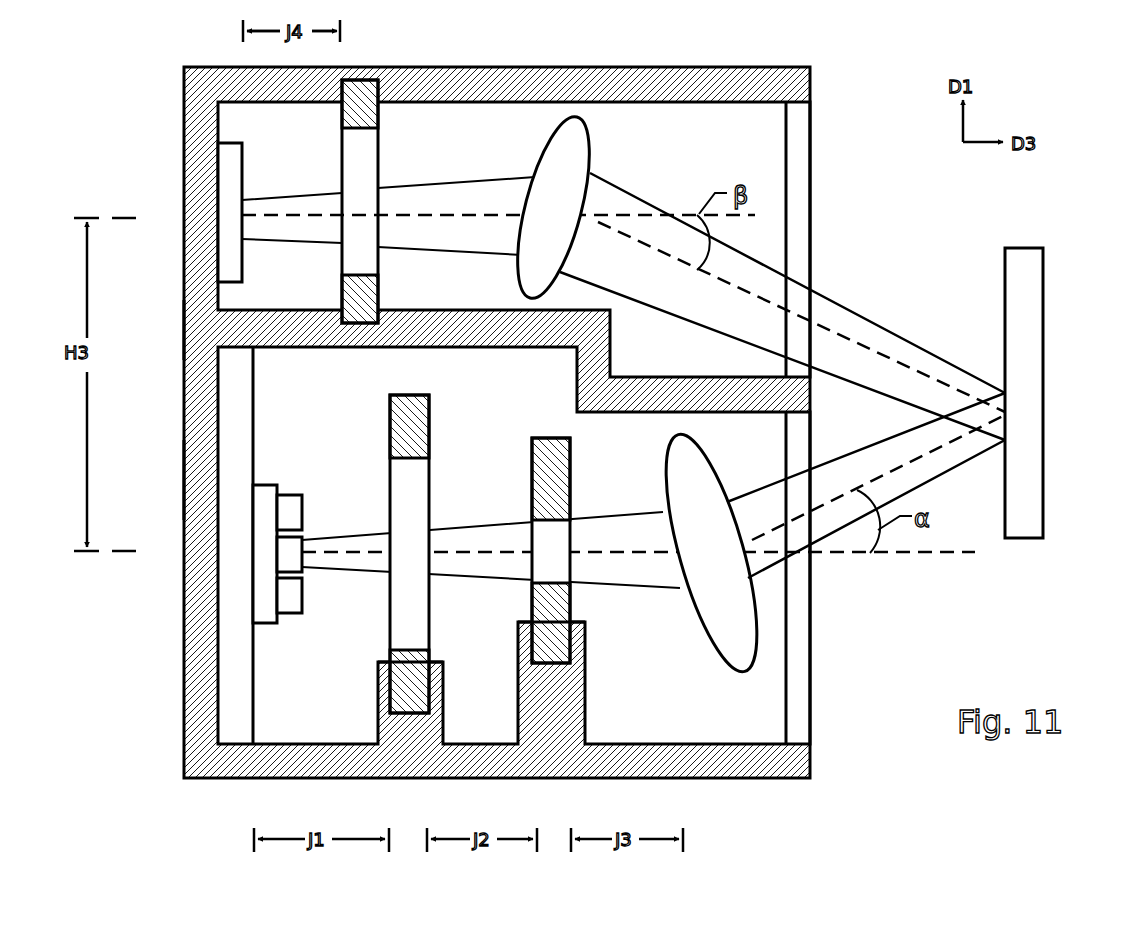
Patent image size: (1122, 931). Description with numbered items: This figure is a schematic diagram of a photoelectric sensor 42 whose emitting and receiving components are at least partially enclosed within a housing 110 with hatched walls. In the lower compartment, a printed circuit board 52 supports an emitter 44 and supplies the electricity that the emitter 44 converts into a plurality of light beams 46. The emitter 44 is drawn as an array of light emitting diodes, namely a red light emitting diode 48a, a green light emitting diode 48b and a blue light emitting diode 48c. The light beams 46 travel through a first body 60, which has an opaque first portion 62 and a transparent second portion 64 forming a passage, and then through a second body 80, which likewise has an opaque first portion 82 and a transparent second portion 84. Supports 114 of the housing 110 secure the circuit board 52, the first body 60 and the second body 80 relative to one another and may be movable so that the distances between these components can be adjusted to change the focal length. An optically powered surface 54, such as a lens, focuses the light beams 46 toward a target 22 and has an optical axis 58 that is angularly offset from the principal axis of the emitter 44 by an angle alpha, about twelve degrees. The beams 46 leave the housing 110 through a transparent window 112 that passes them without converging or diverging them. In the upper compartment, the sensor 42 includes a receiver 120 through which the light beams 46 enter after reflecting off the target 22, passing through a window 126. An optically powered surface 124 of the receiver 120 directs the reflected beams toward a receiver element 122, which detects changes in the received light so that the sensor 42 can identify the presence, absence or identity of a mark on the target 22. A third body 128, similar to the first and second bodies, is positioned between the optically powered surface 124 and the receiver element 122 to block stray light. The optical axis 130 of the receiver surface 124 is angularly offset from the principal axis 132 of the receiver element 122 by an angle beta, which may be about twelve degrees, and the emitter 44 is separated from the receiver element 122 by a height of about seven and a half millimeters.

The receiver 120 is at (814, 76).
The photoelectric sensor 42 is at (183, 331).
The housing 110 is at (183, 478).
The window 126 is at (811, 173).
The window 112 is at (811, 707).
The receiver element 122 is at (244, 155).
The third body 128 is at (380, 148).
The principal axis 132 is at (420, 216).
The optically powered surface 124 is at (590, 152).
The light beams 46 is at (840, 305).
The optical axis 130 is at (880, 353).
The target 22 is at (1044, 342).
The printed circuit board 52 is at (248, 393).
The emitter 44 is at (268, 482).
The blue light emitting diode 48c is at (290, 494).
The green light emitting diode 48b is at (301, 536).
The red light emitting diode 48a is at (291, 614).
The first body 60 is at (416, 552).
The first portion 62 is at (390, 420).
The second portion 64 is at (389, 630).
The second body 80 is at (552, 543).
The first portion 82 is at (532, 471).
The second portion 84 is at (532, 520).
The supports 114 is at (382, 715).
The optically powered surface 54 is at (698, 627).
The optical axis 58 is at (920, 458).